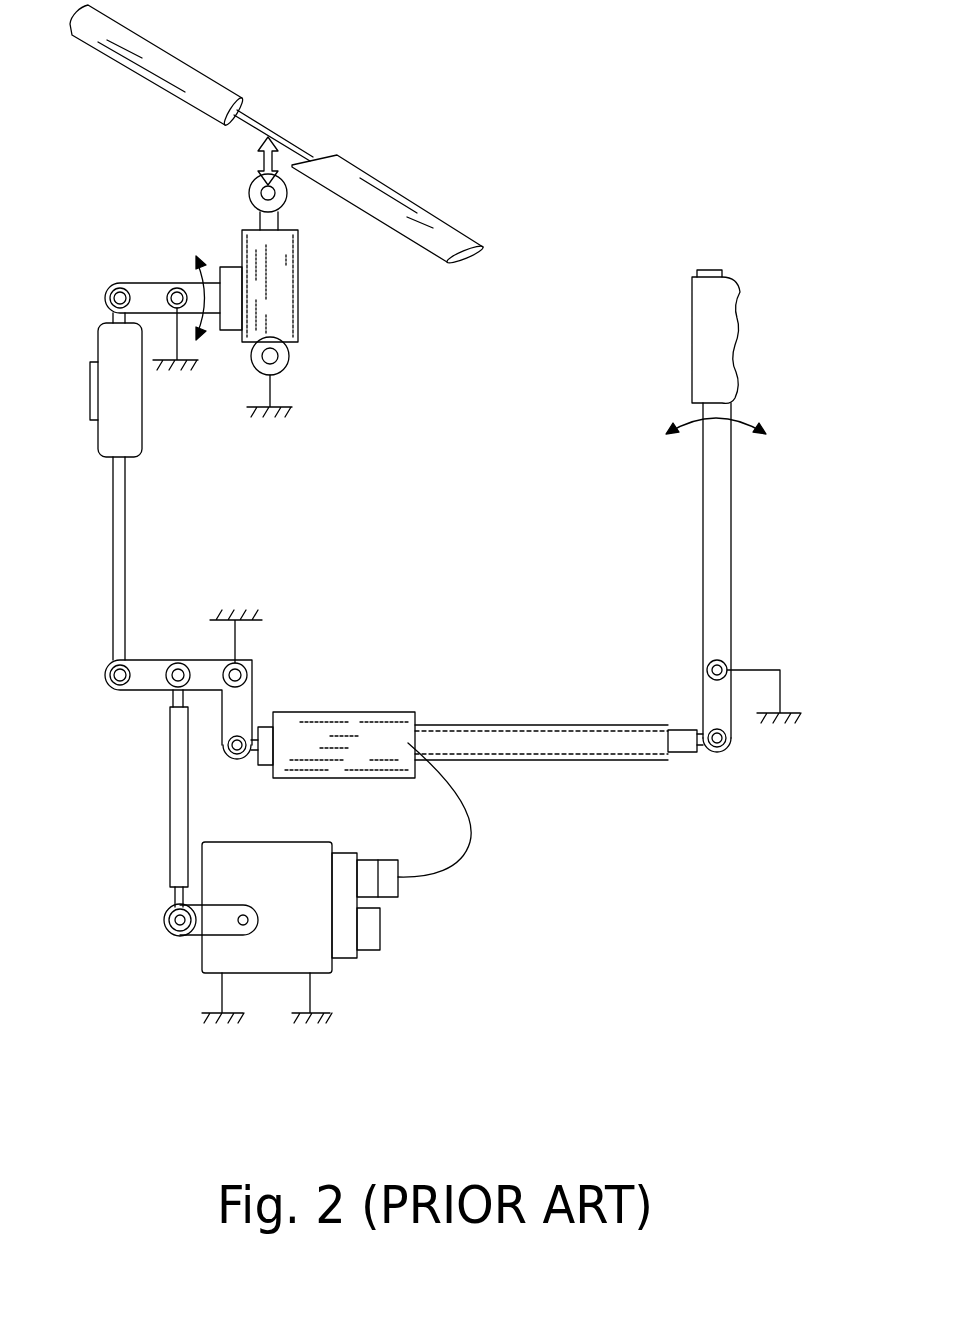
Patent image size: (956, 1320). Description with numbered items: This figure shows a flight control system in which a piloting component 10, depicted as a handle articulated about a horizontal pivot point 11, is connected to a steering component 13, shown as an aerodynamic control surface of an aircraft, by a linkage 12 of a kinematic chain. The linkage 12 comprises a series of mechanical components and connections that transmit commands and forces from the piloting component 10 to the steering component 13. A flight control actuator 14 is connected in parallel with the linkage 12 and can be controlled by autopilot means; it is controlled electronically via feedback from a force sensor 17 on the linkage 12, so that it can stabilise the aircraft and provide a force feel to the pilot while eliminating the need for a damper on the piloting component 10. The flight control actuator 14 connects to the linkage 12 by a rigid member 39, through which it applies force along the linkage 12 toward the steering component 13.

The piloting component 10 is at (717, 498).
The horizontal pivot point 11 is at (704, 670).
The linkage 12 is at (342, 598).
The steering component 13 is at (349, 172).
The flight control actuator 14 is at (300, 948).
The force sensor 17 is at (357, 725).
The rigid member 39 is at (178, 790).